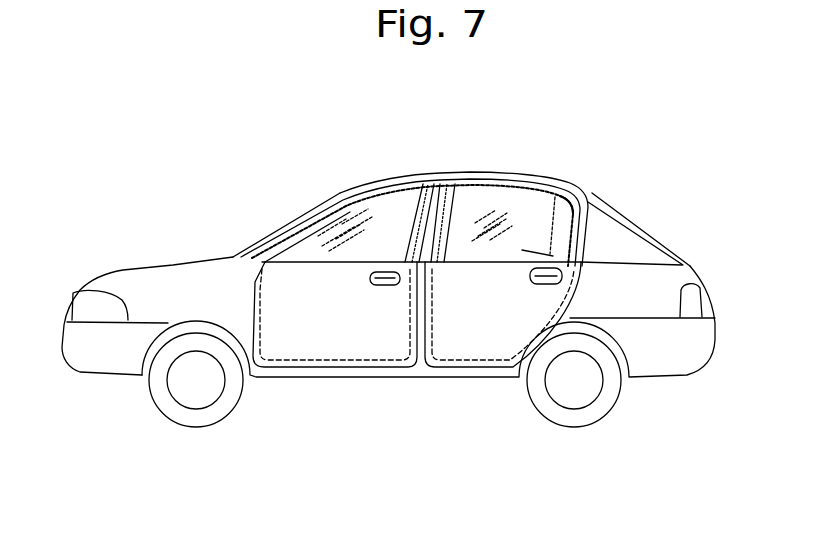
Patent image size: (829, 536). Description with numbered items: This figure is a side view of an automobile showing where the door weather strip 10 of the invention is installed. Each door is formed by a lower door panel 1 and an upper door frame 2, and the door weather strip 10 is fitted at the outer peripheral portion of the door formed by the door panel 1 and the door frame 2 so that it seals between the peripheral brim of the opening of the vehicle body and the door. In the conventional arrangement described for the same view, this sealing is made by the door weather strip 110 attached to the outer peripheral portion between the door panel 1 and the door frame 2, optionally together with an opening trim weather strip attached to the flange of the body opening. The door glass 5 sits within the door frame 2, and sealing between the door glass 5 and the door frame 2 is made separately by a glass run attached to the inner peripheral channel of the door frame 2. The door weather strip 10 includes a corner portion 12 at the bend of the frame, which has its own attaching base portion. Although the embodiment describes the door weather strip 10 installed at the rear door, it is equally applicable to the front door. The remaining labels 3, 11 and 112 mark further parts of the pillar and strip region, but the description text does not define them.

The door panel 1 is at (338, 340).
The door frame 2 is at (303, 207).
The center pillar 3 is at (413, 178).
The door glass 5 is at (300, 257).
The door weather strip 10 is at (335, 194).
The door weather strip 110 is at (458, 178).
The roof side rail seal 11 is at (490, 177).
The corner portion 12 is at (613, 196).
The weather strip corner portion 112 is at (657, 176).